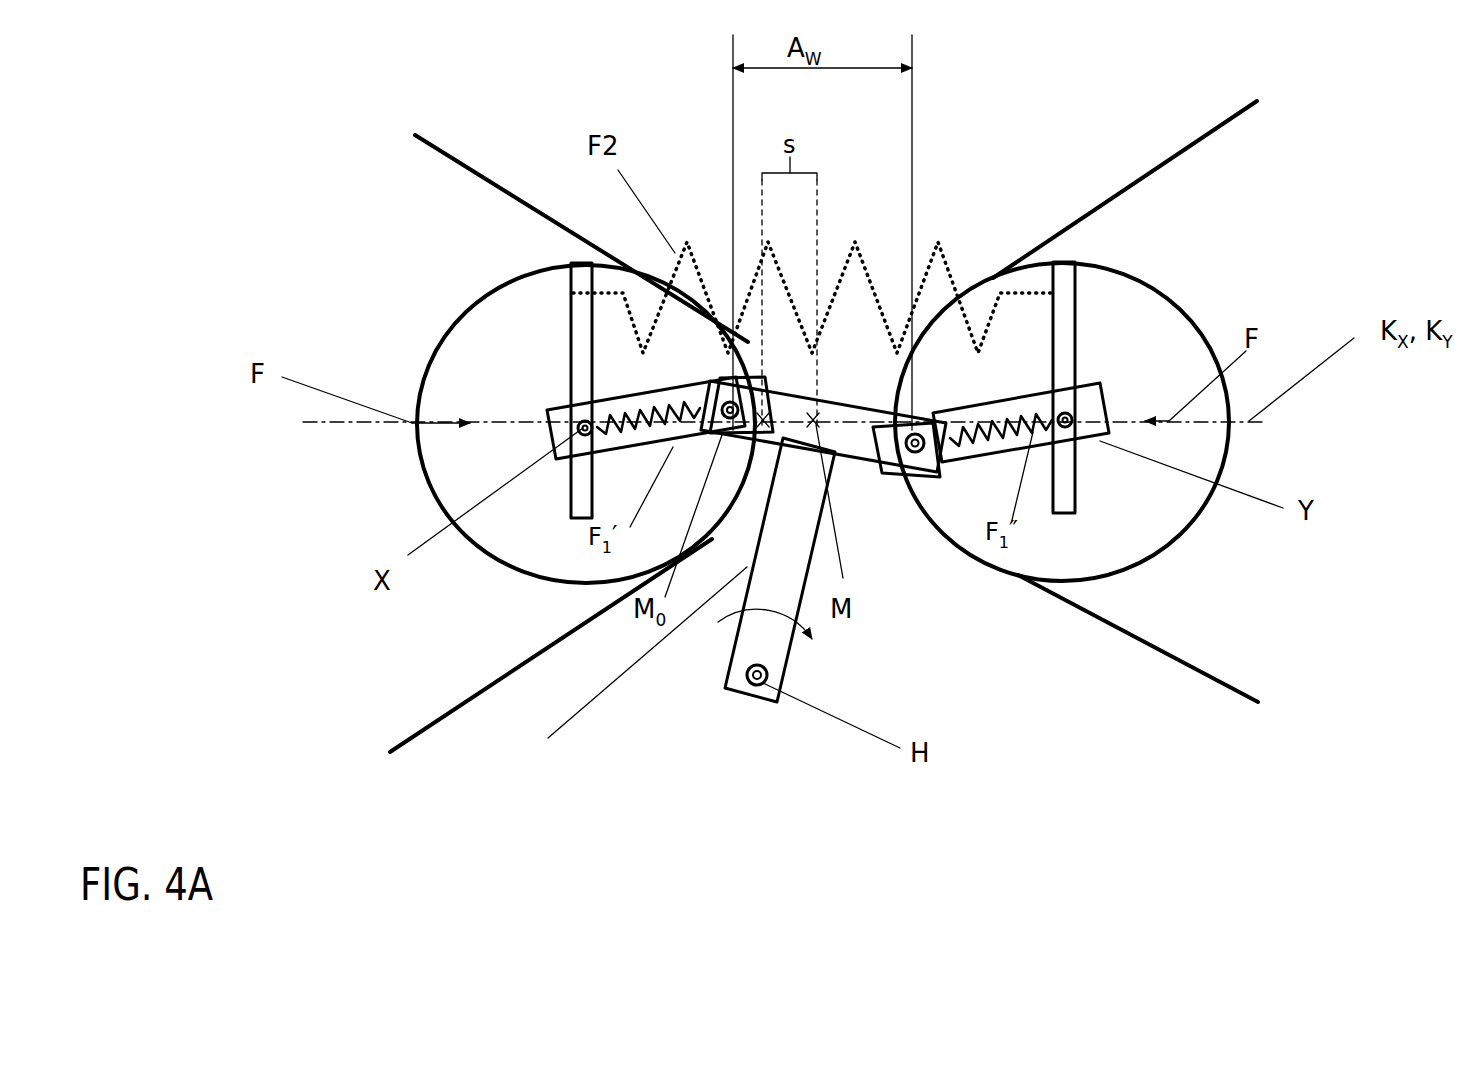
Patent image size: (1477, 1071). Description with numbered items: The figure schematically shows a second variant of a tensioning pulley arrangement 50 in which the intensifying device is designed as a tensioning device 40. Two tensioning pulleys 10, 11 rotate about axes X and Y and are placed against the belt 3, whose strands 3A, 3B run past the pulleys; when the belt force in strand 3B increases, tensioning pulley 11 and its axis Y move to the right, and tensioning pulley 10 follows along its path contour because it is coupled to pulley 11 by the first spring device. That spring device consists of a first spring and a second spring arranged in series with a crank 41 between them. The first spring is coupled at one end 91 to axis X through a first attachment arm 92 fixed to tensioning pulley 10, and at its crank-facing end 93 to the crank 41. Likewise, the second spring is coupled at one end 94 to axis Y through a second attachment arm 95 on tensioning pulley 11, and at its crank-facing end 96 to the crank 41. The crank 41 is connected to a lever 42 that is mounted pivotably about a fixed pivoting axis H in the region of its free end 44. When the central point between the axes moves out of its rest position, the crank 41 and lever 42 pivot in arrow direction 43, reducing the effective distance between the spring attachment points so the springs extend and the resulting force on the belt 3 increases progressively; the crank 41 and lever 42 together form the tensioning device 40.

The belt 3 is at (824, 406).
The belt strand 3A is at (452, 158).
The belt strand 3B is at (1212, 127).
The first tensioning pulley 10 is at (477, 367).
The second tensioning pulley 11 is at (1143, 308).
The tensioning device 40 is at (932, 627).
The crank 41 is at (857, 443).
The lever 42 is at (629, 683).
The arrow direction 43 is at (780, 620).
The free end 44 is at (797, 683).
The tensioning pulley arrangement 50 is at (292, 322).
The end of first spring 91 is at (550, 438).
The first attachment arm 92 is at (567, 357).
The crank-facing end 93 is at (760, 374).
The end of second spring 94 is at (1100, 388).
The second attachment arm 95 is at (1075, 345).
The crank-facing end 96 is at (883, 473).